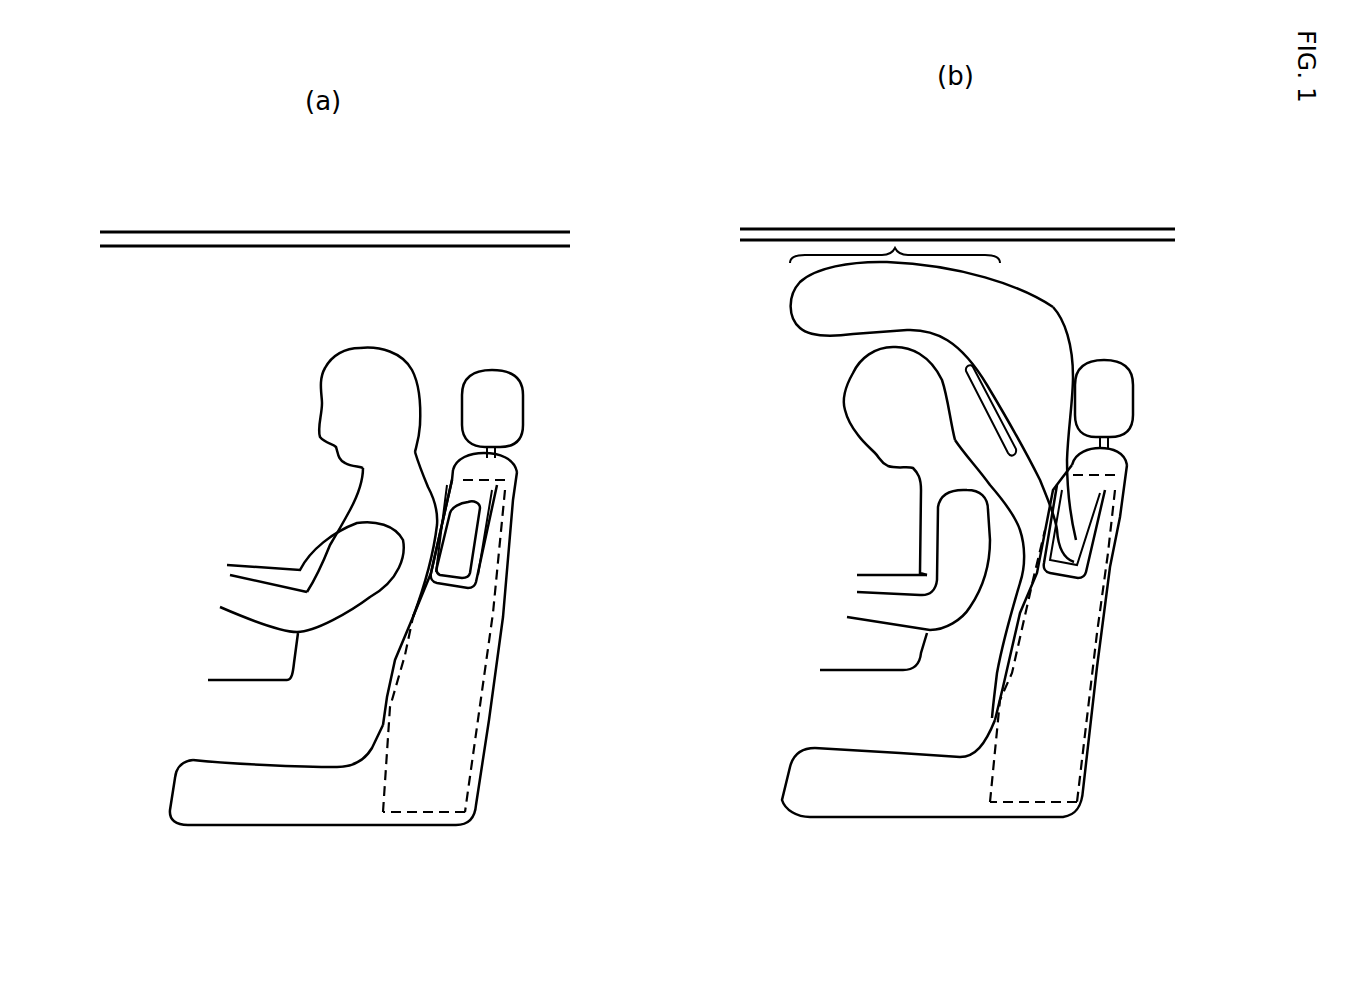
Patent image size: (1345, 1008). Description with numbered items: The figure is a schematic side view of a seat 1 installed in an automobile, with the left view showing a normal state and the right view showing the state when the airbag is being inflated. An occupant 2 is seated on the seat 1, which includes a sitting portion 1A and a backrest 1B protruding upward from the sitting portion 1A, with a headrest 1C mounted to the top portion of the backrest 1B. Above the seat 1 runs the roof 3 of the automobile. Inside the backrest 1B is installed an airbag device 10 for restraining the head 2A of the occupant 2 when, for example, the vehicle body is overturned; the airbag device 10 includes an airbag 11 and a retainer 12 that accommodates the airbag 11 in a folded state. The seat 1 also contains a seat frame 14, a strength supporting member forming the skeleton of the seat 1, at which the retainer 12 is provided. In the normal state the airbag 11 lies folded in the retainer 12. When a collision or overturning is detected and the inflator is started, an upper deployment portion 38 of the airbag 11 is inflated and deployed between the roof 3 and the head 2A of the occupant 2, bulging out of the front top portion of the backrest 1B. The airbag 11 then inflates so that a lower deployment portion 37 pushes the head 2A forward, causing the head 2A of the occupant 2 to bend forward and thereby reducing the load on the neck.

The seat 1 is at (505, 655).
The sitting portion 1A is at (288, 822).
The backrest 1B is at (525, 472).
The headrest 1C is at (523, 410).
The occupant 2 is at (305, 490).
The head 2A is at (370, 362).
The roof 3 is at (352, 232).
The airbag device 10 is at (528, 533).
The airbag 11 is at (450, 470).
The retainer 12 is at (478, 568).
The seat frame 14 is at (413, 830).
The lower deployment portion 37 is at (988, 404).
The upper deployment portion 38 is at (895, 248).